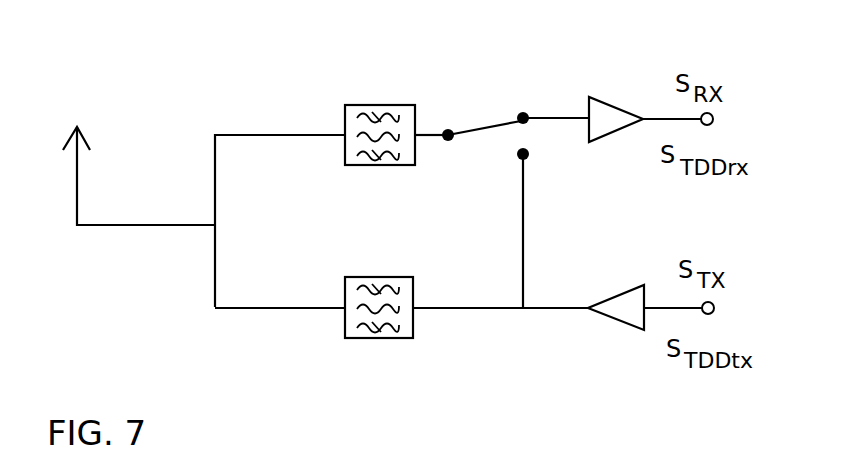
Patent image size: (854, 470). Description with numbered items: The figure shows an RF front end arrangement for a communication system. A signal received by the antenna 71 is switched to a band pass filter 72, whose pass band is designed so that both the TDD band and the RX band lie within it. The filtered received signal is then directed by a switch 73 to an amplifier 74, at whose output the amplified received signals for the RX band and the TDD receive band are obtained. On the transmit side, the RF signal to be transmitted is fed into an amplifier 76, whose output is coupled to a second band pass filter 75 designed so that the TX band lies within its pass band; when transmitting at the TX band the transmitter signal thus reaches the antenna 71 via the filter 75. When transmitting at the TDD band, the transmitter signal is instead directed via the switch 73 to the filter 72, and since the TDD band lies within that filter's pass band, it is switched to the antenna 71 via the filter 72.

The antenna 71 is at (92, 148).
The band pass filter 72 is at (375, 105).
The switch 73 is at (478, 121).
The amplifier 74 is at (606, 96).
The band pass filter 75 is at (375, 277).
The amplifier 76 is at (622, 290).